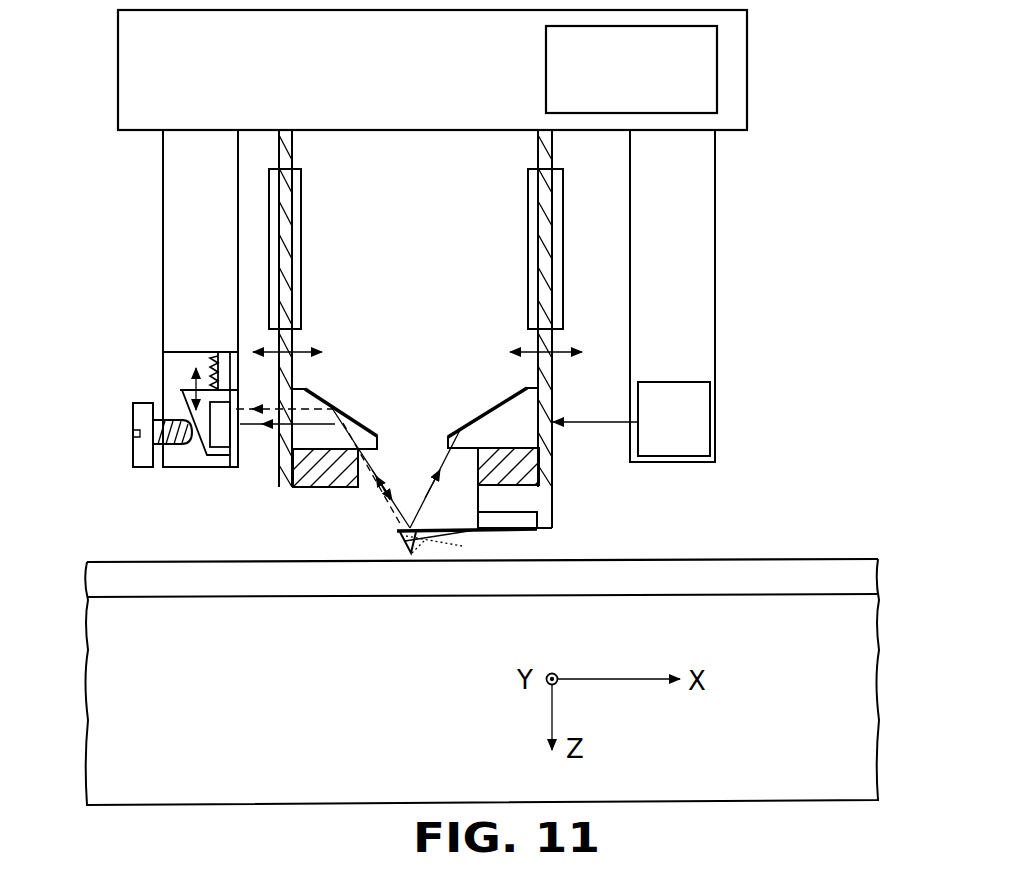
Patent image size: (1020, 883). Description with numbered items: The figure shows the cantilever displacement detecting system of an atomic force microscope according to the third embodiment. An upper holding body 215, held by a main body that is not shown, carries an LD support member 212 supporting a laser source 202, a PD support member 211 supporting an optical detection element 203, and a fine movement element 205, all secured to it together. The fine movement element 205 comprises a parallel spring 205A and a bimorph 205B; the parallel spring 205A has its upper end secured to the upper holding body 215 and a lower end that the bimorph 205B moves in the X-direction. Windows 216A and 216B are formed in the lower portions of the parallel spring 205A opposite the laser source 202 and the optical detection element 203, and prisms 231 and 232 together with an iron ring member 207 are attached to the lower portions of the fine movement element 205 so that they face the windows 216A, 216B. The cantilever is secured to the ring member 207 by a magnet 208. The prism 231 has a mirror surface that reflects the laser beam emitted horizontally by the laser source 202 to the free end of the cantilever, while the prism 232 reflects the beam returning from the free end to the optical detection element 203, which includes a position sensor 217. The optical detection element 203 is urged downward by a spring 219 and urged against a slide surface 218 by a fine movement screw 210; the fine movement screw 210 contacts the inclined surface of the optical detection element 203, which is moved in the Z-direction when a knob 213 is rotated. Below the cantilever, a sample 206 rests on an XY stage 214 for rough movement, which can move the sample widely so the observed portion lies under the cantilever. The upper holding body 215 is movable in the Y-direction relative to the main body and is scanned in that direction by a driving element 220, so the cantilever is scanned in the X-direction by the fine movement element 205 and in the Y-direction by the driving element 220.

The laser source 202 is at (700, 410).
The optical detection element 203 is at (183, 392).
The fine movement element 205 is at (303, 218).
The parallel spring 205A is at (287, 150).
The bimorph 205B is at (302, 297).
The sample 206 is at (828, 565).
The ring member 207 is at (318, 490).
The magnet 208 is at (554, 497).
The fine movement screw 210 is at (182, 447).
The PD support member 211 is at (177, 263).
The LD support member 212 is at (695, 288).
The knob 213 is at (137, 455).
The XY stage 214 is at (426, 730).
The upper holding body 215 is at (735, 82).
The window 216A is at (549, 395).
The window 216B is at (285, 440).
The position sensor 217 is at (220, 440).
The slide surface 218 is at (236, 352).
The spring 219 is at (207, 357).
The driving element 220 is at (547, 70).
The prism 231 is at (488, 405).
The prism 232 is at (342, 410).